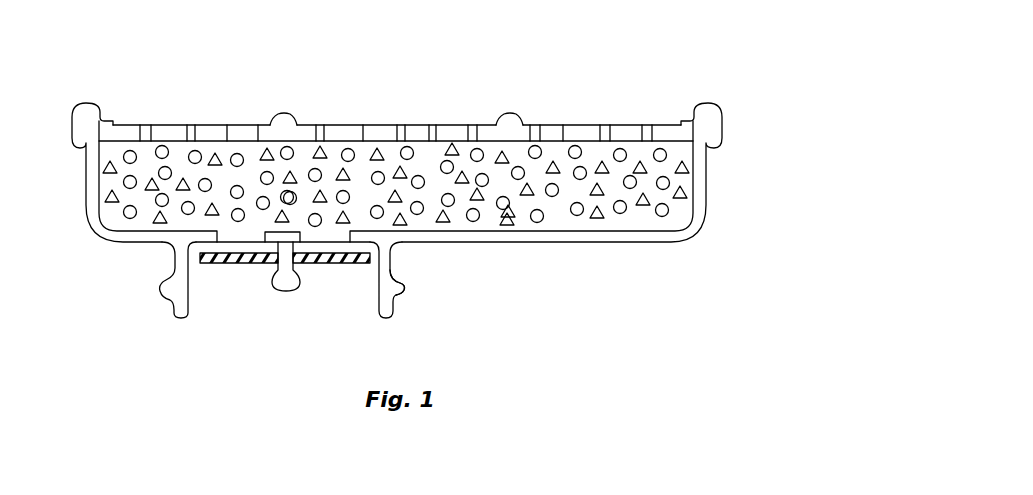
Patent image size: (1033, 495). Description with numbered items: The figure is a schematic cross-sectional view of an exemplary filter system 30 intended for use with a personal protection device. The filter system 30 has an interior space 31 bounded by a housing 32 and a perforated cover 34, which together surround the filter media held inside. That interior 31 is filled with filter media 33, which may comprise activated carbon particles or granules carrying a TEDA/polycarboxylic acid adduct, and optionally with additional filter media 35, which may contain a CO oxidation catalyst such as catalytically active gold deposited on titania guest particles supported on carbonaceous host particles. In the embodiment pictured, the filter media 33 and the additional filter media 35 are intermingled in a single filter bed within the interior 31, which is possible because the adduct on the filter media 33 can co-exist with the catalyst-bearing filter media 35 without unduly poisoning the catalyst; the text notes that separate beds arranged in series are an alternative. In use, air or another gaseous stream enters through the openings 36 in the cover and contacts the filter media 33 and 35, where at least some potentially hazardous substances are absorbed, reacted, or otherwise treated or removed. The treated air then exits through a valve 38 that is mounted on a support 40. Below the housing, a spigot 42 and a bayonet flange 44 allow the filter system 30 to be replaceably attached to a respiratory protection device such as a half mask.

The filter system 30 is at (627, 75).
The interior space 31 is at (684, 148).
The housing 32 is at (700, 187).
The filter media 33 is at (234, 154).
The perforated cover 34 is at (126, 132).
The additional filter media 35 is at (375, 151).
The openings 36 is at (473, 132).
The valve 38 is at (226, 264).
The support 40 is at (287, 284).
The spigot 42 is at (386, 313).
The bayonet flange 44 is at (398, 288).